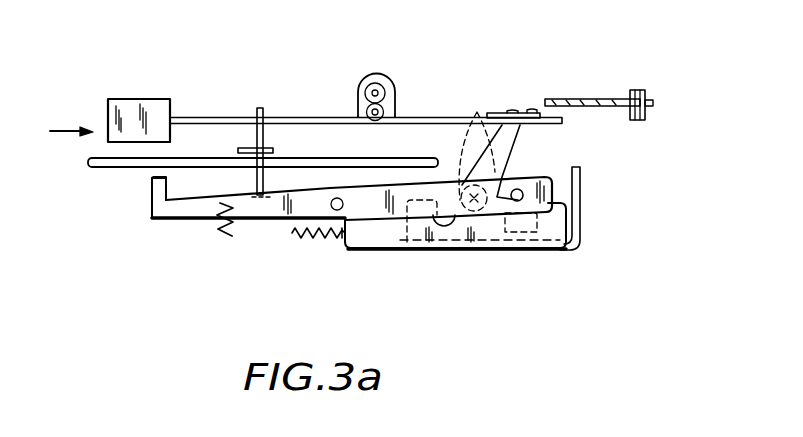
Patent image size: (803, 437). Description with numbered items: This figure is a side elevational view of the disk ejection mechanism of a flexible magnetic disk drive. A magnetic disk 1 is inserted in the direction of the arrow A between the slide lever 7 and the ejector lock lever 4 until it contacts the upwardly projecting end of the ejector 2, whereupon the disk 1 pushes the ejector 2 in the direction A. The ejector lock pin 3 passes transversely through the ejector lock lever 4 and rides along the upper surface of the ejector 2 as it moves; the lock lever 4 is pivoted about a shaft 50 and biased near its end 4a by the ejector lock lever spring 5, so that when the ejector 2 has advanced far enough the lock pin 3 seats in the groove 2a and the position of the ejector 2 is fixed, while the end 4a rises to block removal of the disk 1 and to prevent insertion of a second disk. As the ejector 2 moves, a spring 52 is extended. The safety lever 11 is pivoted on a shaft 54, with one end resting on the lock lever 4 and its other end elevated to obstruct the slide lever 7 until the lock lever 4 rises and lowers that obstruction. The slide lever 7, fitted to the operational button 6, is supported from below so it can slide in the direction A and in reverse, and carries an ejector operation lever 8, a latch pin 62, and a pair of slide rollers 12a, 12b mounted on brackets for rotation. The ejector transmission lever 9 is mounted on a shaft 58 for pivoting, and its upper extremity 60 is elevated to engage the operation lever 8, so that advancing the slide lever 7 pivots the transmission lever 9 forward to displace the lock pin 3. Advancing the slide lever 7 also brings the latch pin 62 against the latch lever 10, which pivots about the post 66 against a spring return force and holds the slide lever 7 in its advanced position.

The direction of insertion arrow A is at (50, 131).
The magnetic disk 1 is at (103, 168).
The ejector 2 is at (565, 222).
The groove 2a is at (447, 228).
The ejector lock pin 3 is at (523, 189).
The ejector lock lever 4 is at (188, 210).
The end of ejector lock lever 4a is at (152, 178).
The ejector lock lever spring 5 is at (232, 236).
The operational button 6 is at (146, 99).
The slide lever 7 is at (207, 118).
The ejector operation lever 8 is at (492, 110).
The ejector transmission lever 9 is at (508, 140).
The latch lever 10 is at (608, 98).
The safety lever 11 is at (268, 128).
The slide roller 12a is at (395, 101).
The slide roller 12b is at (392, 78).
The shaft 50 is at (337, 198).
The spring 52 is at (303, 244).
The shaft 54 is at (274, 150).
The shaft 58 is at (485, 157).
The upper extremity of ejector transmission lever 60 is at (512, 110).
The latch pin 62 is at (530, 108).
The post 66 is at (643, 120).